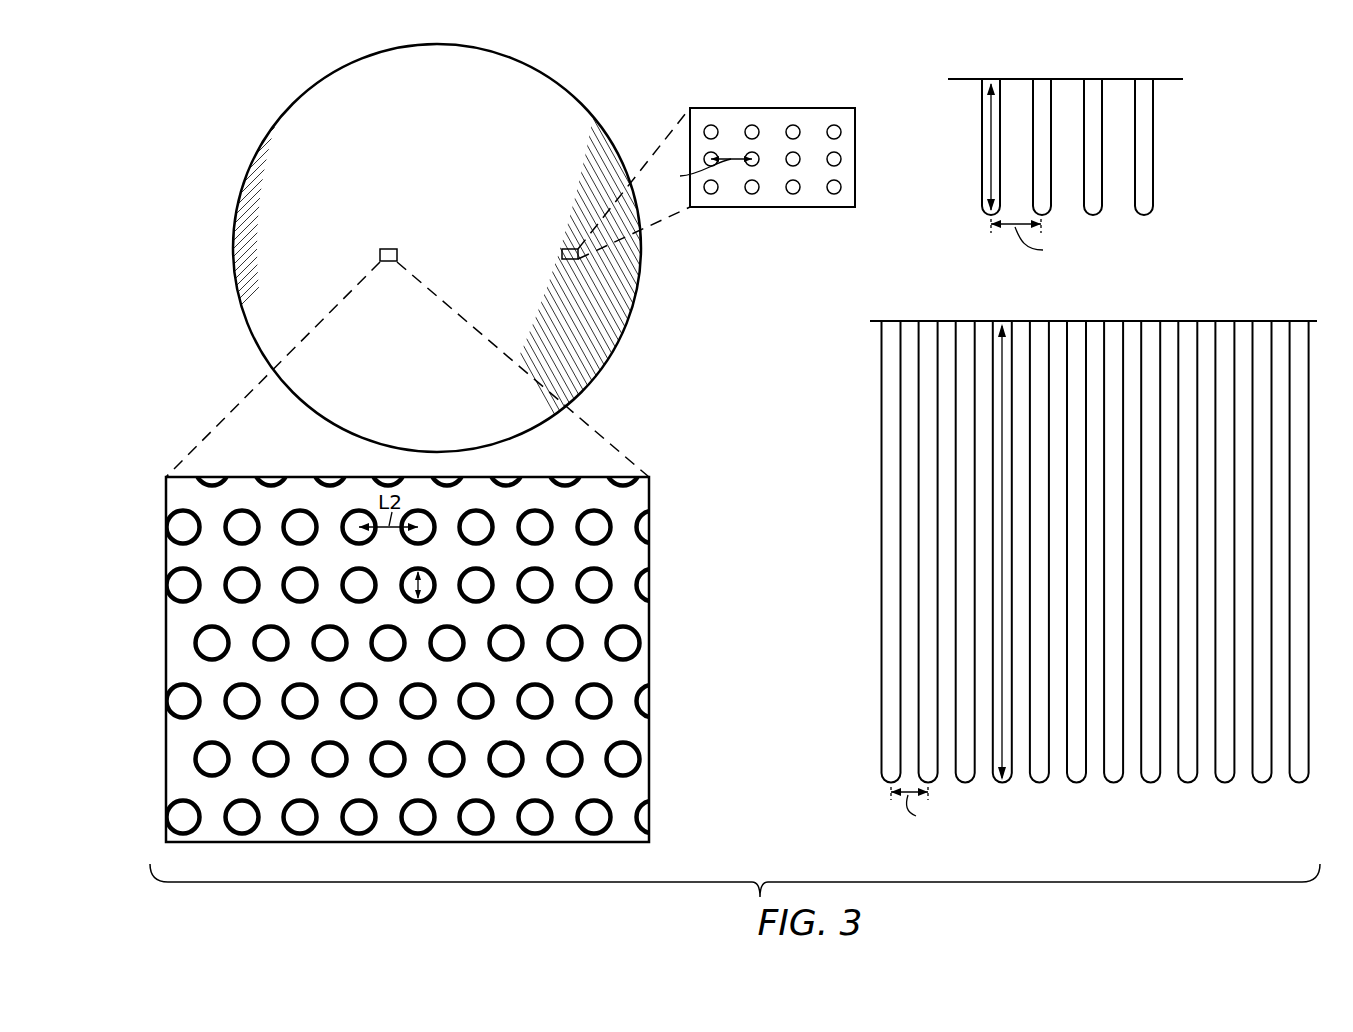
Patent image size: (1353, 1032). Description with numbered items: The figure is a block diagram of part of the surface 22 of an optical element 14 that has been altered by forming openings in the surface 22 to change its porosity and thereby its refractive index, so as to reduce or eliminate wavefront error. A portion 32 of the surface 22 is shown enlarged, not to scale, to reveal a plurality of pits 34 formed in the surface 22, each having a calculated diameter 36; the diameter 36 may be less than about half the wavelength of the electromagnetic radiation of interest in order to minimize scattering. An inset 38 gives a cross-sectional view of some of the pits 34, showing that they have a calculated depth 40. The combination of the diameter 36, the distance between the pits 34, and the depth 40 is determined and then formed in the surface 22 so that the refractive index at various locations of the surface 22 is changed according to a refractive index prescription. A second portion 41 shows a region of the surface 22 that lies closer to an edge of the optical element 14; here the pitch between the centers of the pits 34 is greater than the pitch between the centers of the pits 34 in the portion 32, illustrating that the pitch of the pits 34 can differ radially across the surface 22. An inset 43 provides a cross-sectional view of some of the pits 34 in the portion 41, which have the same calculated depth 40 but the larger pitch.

The optical element 14 is at (527, 62).
The surface 22 is at (440, 202).
The portion 32 is at (397, 251).
The pits 34 is at (175, 697).
The diameter 36 is at (418, 585).
The inset 38 is at (937, 294).
The depth 40 is at (982, 137).
The portion 41 is at (855, 109).
The inset 43 is at (972, 67).